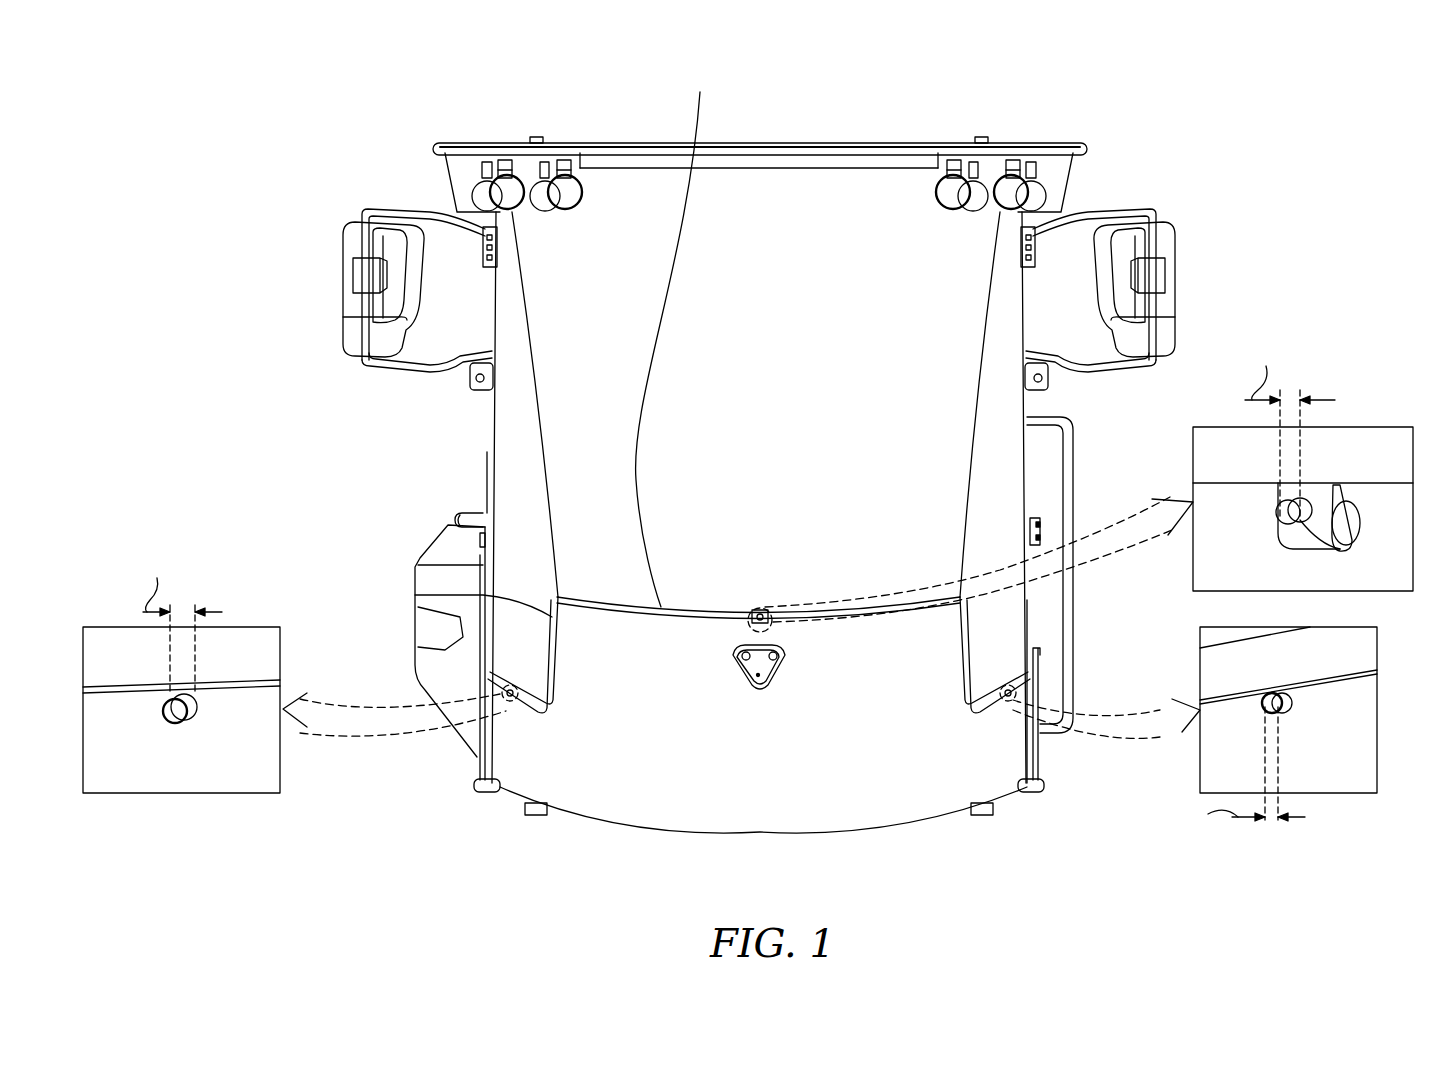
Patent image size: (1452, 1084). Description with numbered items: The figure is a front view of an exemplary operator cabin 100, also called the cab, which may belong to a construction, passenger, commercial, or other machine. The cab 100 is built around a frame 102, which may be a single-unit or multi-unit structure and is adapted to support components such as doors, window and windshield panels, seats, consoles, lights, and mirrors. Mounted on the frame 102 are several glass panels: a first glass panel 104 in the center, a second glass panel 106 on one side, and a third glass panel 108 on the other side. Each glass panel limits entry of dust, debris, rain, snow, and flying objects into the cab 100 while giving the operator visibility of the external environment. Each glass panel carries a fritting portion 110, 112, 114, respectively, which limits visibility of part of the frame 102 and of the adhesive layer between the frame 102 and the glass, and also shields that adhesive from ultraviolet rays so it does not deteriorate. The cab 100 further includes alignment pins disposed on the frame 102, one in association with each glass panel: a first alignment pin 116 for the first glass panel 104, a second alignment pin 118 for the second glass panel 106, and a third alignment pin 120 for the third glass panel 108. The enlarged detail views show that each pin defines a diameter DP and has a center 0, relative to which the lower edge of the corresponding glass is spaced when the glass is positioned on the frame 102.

The operator cabin 100 is at (1262, 104).
The frame 102 is at (778, 769).
The first glass panel 104 is at (764, 404).
The second glass panel 106 is at (993, 457).
The third glass panel 108 is at (505, 437).
The fritting portion 110 is at (683, 335).
The fritting portion 112 is at (973, 640).
The fritting portion 114 is at (548, 600).
The first alignment pin 116 is at (1300, 513).
The second alignment pin 118 is at (1290, 705).
The third alignment pin 120 is at (160, 717).
The center 0 is at (184, 707).